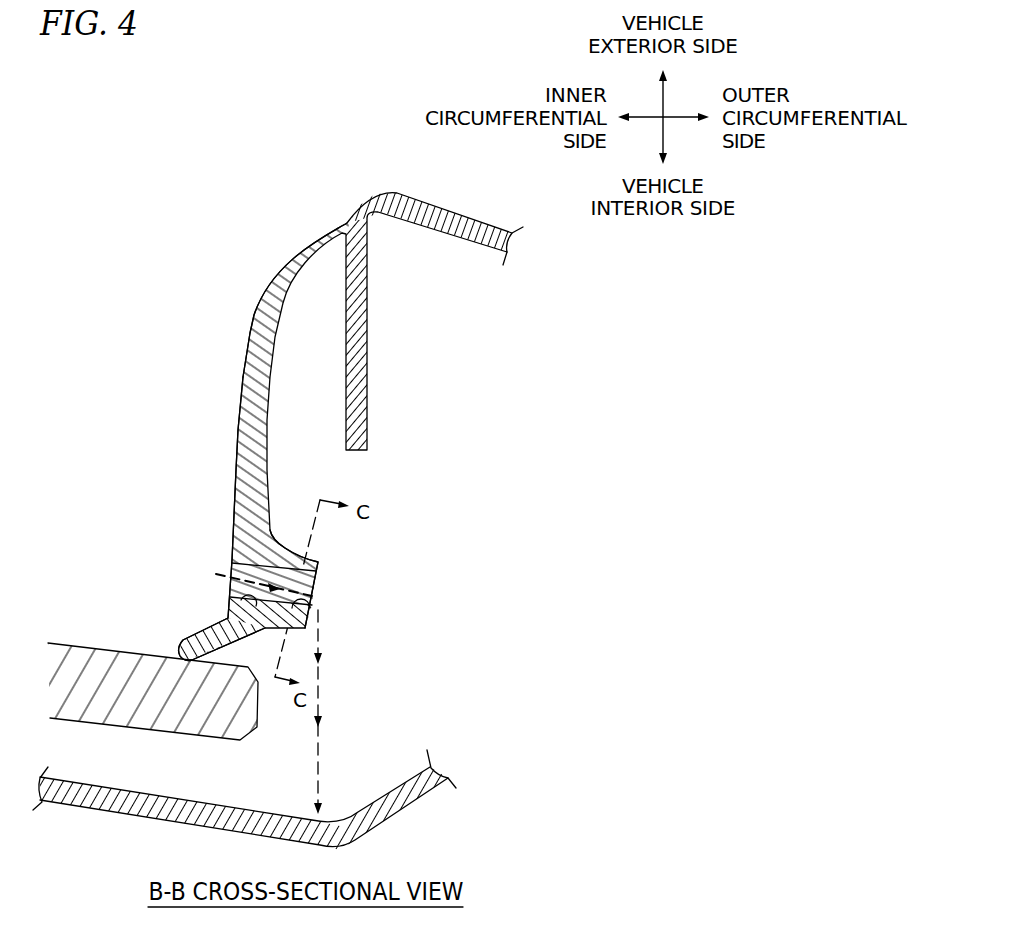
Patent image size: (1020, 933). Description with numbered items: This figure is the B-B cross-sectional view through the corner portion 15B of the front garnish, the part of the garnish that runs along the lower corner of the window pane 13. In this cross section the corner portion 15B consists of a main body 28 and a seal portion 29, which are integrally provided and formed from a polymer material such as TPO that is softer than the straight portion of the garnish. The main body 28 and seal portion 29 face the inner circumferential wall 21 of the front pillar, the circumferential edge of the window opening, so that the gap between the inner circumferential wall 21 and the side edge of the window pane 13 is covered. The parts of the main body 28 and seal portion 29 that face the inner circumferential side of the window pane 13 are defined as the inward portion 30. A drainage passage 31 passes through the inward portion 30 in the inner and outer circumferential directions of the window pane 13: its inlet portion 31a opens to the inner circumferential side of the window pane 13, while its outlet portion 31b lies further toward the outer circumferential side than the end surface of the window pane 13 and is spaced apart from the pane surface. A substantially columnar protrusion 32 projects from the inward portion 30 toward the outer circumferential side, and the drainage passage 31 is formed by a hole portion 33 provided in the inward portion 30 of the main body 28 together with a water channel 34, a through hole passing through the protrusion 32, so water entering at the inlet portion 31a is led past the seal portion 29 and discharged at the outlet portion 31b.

The corner portion 15B is at (320, 478).
The inner circumferential wall 21 is at (350, 350).
The main body 28 is at (250, 340).
The inward portion 30 is at (232, 508).
The drainage passage 31 is at (232, 563).
The inlet portion 31a is at (230, 593).
The outlet portion 31b is at (318, 591).
The protrusion 32 is at (318, 562).
The hole portion 33 is at (241, 600).
The water channel 34 is at (318, 612).
The seal portion 29 is at (183, 640).
The window pane 13 is at (101, 647).